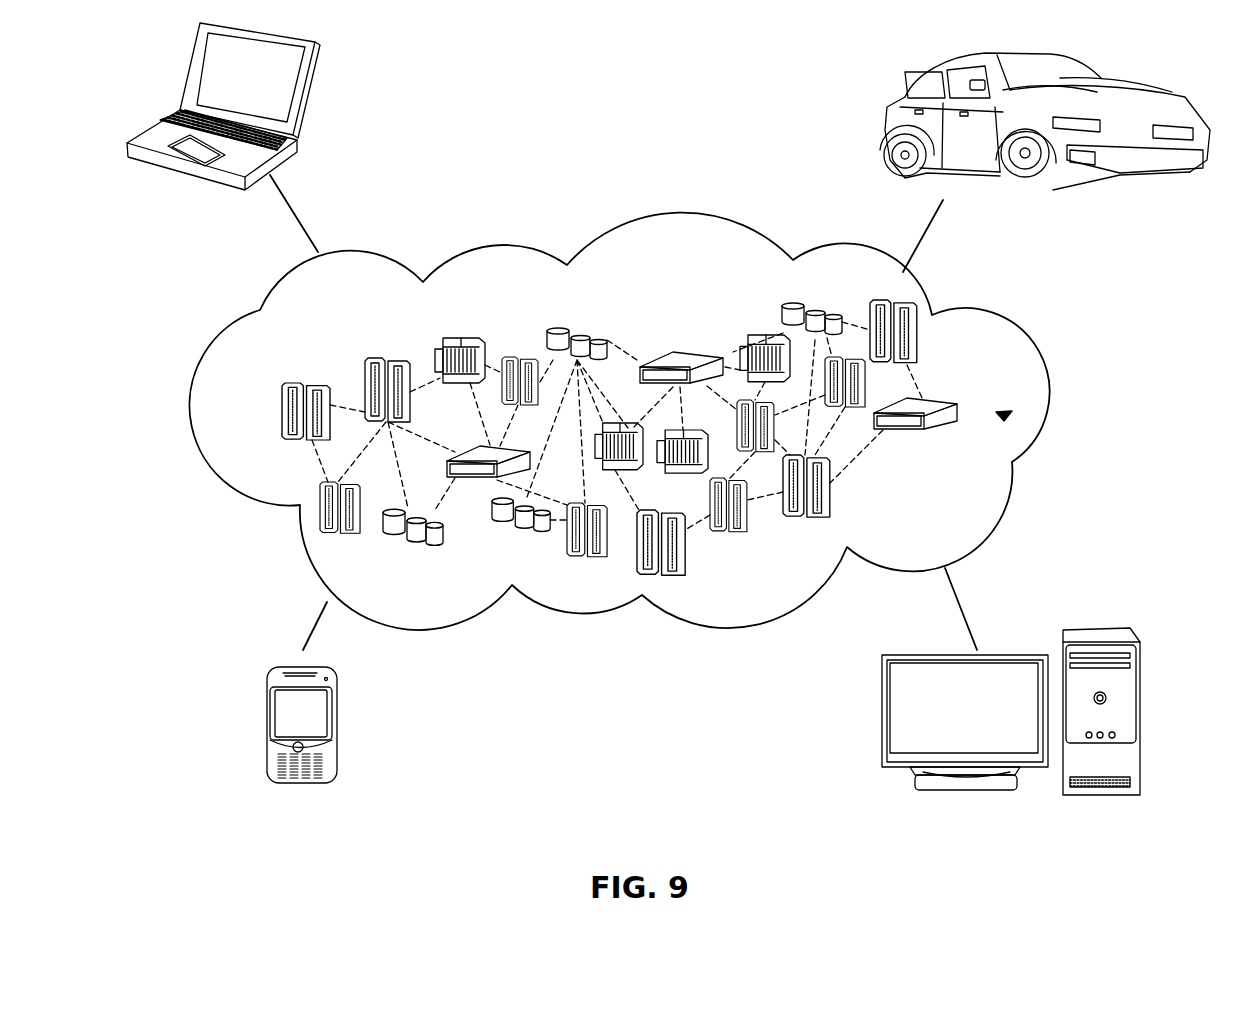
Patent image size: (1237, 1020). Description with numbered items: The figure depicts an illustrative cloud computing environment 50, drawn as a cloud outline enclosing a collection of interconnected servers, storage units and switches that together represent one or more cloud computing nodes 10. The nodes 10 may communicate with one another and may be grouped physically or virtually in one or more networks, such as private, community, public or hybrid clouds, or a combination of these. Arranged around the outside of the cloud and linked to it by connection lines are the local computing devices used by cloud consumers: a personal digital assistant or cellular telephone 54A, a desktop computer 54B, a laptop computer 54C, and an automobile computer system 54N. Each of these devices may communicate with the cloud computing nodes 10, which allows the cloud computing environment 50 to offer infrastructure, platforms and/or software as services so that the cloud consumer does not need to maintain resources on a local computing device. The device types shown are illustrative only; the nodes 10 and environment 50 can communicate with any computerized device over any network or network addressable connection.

The cloud computing nodes 10 is at (1002, 414).
The cloud computing environment 50 is at (1022, 328).
The personal digital assistant (PDA) or cellular telephone 54A is at (263, 727).
The desktop computer 54B is at (1103, 627).
The laptop computer 54C is at (305, 93).
The automobile computer system 54N is at (892, 104).